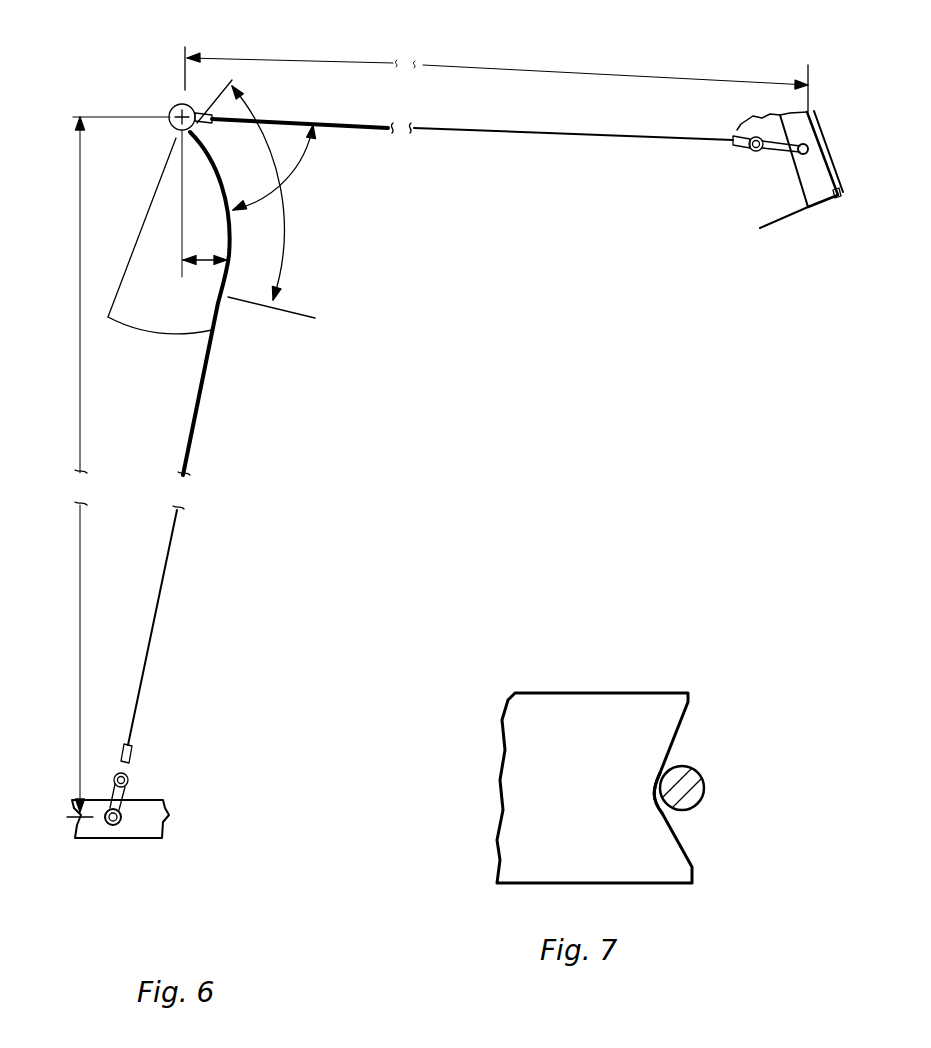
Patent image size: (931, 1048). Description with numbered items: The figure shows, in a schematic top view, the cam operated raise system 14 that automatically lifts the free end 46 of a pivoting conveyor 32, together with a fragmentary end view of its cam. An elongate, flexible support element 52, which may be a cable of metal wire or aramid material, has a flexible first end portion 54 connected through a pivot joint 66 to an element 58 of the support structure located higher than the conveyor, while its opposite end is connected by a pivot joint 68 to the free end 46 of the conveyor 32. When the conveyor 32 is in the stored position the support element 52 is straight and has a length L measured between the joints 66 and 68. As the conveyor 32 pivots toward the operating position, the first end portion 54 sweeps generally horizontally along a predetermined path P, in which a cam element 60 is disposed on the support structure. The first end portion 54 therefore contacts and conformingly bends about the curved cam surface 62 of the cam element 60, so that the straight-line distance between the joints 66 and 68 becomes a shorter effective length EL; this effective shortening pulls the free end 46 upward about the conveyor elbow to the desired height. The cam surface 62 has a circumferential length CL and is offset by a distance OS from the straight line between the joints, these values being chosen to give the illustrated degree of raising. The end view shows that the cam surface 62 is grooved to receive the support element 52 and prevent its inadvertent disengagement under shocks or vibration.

In FIG. 6, the cam operated raise system 14 is at (162, 55).
In FIG. 6, the conveyor 32 is at (457, 531).
In FIG. 6, the free end 46 is at (90, 840).
In FIG. 6, the support element 52 is at (165, 584).
In FIG. 7, the support element 52 is at (703, 782).
In FIG. 6, the first end portion 54 is at (284, 119).
In FIG. 6, the element of support structure 58 is at (127, 162).
In FIG. 6, the pivot joint 66 is at (170, 110).
In FIG. 6, the cam element 60 is at (157, 331).
In FIG. 7, the cam element 60 is at (655, 692).
In FIG. 6, the cam surface 62 is at (210, 332).
In FIG. 7, the cam surface 62 is at (682, 733).
In FIG. 6, the pivot joint 68 is at (125, 820).
In FIG. 6, the length L is at (500, 57).
In FIG. 6, the path of movement P is at (290, 170).
In FIG. 6, the circumferential length CL is at (287, 218).
In FIG. 6, the offset distance OS is at (207, 262).
In FIG. 6, the effective length EL is at (84, 445).